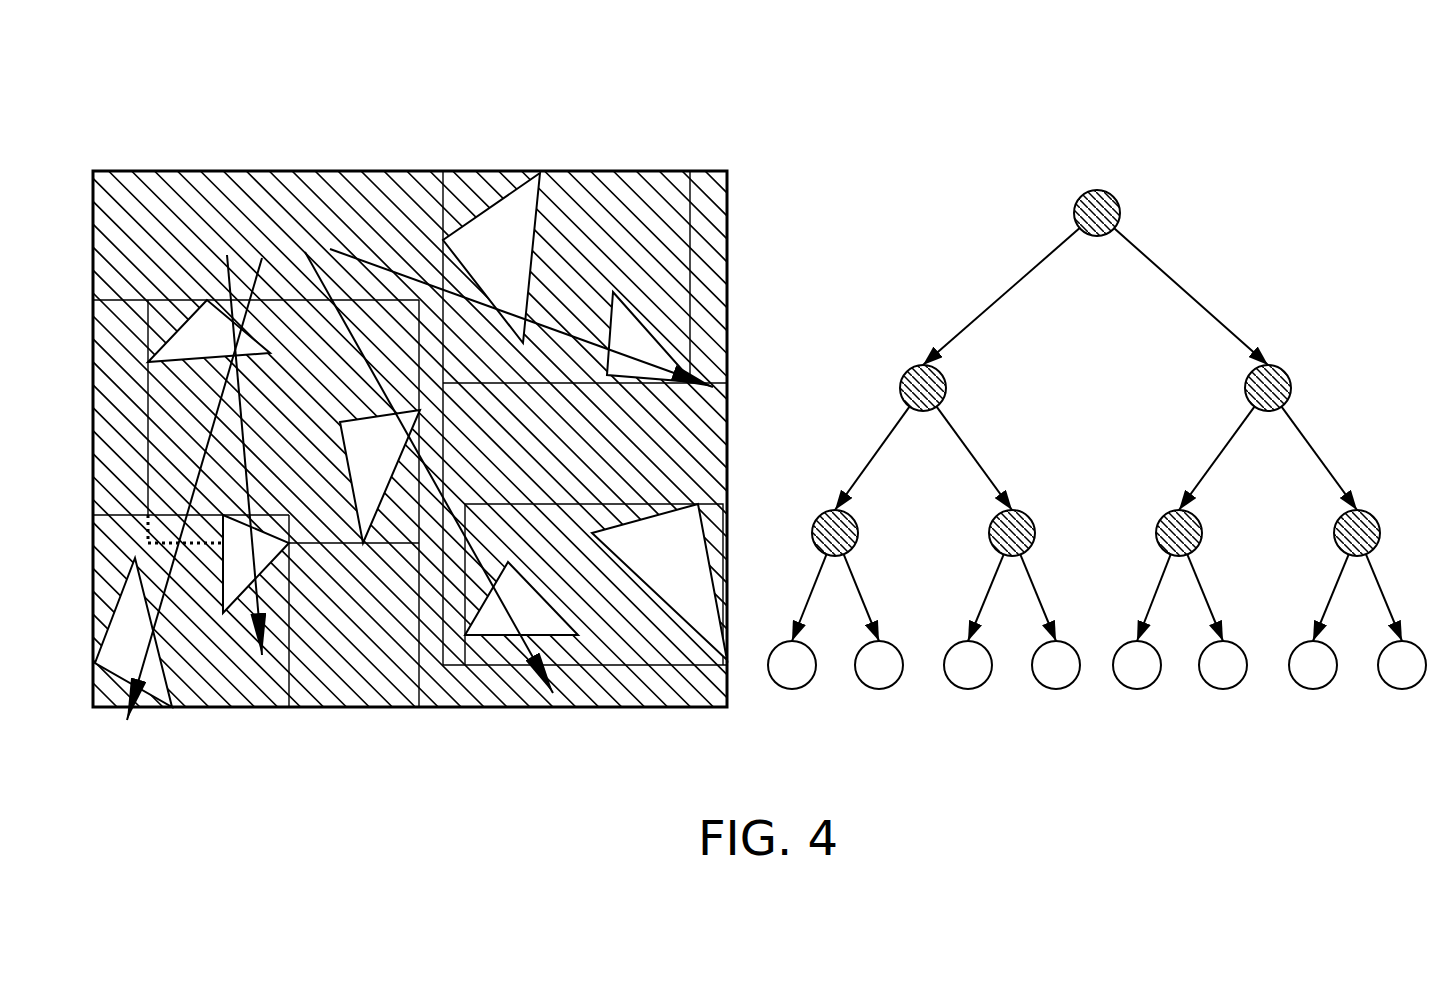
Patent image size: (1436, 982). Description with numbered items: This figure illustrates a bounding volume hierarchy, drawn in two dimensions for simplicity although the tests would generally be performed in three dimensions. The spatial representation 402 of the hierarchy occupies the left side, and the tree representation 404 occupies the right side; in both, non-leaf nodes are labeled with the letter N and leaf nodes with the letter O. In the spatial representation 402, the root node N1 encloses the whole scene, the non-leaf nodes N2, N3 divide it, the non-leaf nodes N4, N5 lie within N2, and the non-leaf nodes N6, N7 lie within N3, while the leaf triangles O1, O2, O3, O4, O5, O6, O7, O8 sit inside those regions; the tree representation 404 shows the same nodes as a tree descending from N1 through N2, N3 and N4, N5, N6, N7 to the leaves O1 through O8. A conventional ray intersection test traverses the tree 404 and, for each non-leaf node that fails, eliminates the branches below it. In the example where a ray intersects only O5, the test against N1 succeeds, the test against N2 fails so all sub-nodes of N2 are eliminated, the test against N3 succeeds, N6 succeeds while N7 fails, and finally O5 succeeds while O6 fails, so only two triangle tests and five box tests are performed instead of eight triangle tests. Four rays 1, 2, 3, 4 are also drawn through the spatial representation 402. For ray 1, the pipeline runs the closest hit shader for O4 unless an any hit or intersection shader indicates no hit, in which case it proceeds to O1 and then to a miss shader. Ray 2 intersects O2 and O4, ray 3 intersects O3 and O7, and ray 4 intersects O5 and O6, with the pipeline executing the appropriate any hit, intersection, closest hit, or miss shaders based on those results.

The spatial representation 402 is at (410, 367).
The tree representation 404 is at (875, 133).
The ray 1 is at (262, 258).
The ray 2 is at (227, 255).
The ray 3 is at (305, 252).
The ray 4 is at (330, 249).
The non-leaf node N1 is at (410, 439).
The non-leaf node N2 is at (256, 503).
The non-leaf node N3 is at (585, 418).
The non-leaf node N4 is at (191, 611).
The non-leaf node N5 is at (283, 421).
The non-leaf node N6 is at (585, 277).
The non-leaf node N7 is at (594, 584).
The leaf node O1 is at (133, 632).
The leaf node O2 is at (256, 564).
The leaf node O3 is at (380, 476).
The leaf node O4 is at (209, 331).
The leaf node O5 is at (491, 258).
The leaf node O6 is at (650, 337).
The leaf node O7 is at (521, 598).
The leaf node O8 is at (659, 582).